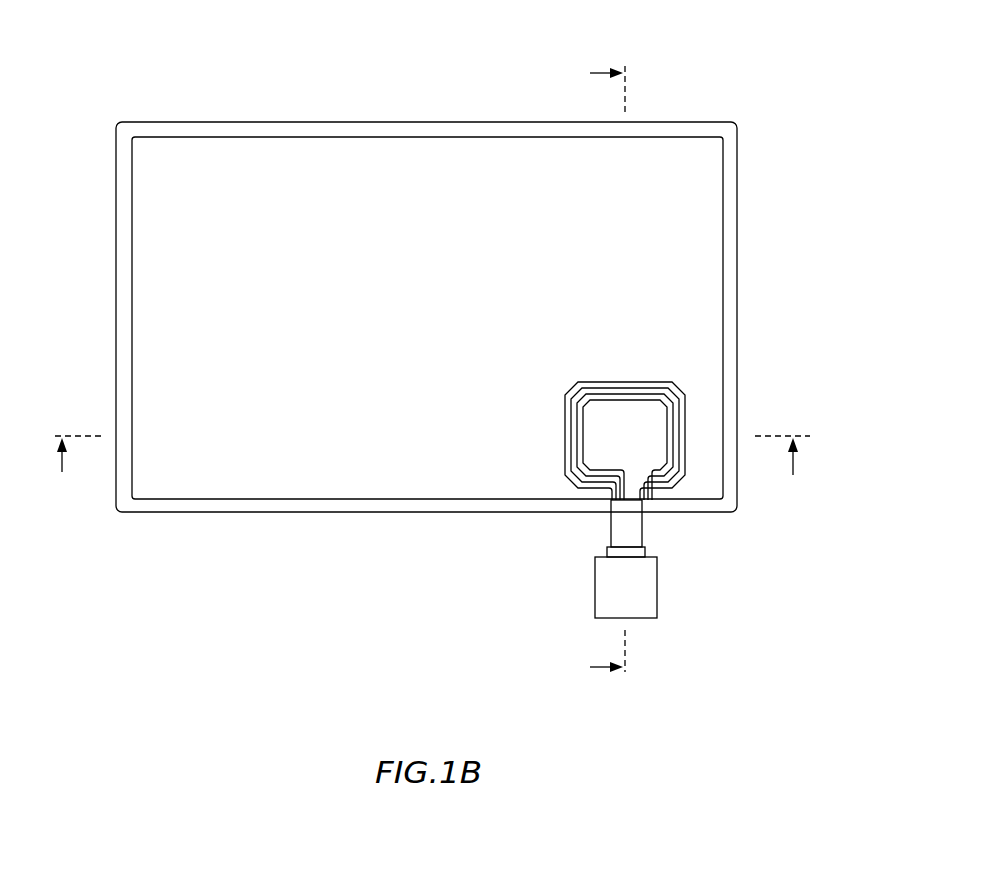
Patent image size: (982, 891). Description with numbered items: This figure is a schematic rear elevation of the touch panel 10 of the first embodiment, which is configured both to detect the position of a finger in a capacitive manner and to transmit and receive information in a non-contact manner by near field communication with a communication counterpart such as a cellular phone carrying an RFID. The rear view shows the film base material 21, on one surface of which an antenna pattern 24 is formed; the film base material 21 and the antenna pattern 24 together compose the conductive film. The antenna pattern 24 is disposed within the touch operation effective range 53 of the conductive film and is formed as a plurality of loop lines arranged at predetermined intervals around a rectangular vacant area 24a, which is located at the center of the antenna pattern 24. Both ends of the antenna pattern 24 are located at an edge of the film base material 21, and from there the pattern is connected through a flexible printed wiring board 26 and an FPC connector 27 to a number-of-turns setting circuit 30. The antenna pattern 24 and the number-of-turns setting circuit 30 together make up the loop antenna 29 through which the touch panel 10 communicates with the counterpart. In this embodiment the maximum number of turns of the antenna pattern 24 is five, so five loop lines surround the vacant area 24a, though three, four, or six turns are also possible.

The touch panel 10 is at (443, 70).
The film base material 21 is at (738, 162).
The touch operation effective range 53 is at (705, 208).
The antenna pattern 24 is at (688, 417).
The vacant area 24a is at (646, 432).
The flexible printed wiring board 26 is at (616, 532).
The FPC connector 27 is at (646, 548).
The loop antenna 29 is at (457, 362).
The number-of-turns setting circuit 30 is at (658, 586).